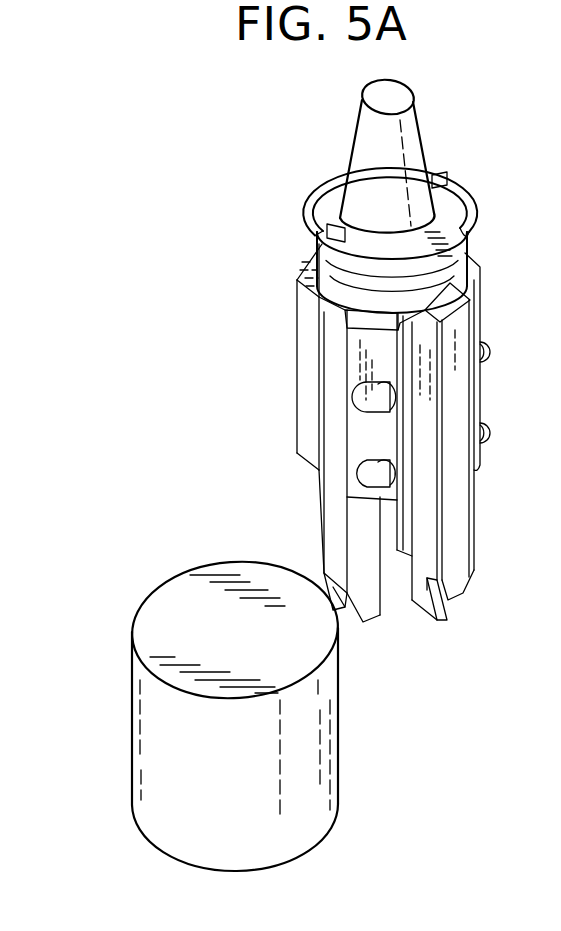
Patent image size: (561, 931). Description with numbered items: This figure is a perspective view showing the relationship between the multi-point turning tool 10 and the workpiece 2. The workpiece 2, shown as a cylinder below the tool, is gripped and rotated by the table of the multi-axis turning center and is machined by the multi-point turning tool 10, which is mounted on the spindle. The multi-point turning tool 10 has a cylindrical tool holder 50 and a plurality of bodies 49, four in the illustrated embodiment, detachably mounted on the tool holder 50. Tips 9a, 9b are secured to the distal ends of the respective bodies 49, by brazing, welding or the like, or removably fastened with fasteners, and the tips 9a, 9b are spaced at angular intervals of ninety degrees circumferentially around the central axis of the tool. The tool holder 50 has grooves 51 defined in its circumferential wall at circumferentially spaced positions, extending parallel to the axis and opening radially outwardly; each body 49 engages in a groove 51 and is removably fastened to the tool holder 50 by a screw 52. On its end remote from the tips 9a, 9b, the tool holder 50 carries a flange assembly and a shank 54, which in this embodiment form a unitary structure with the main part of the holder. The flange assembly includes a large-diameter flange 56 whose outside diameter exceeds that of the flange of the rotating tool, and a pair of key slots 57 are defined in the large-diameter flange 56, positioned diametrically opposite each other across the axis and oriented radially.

The workpiece 2 is at (340, 760).
The tip 9a is at (330, 602).
The tip 9b is at (447, 620).
The multi-point turning tool 10 is at (485, 313).
The body 49 is at (333, 432).
The tool holder 50 is at (482, 388).
The groove 51 is at (345, 375).
The screw 52 is at (357, 473).
The shank 54 is at (423, 127).
The large-diameter flange 56 is at (474, 220).
The key slot 57 is at (307, 207).